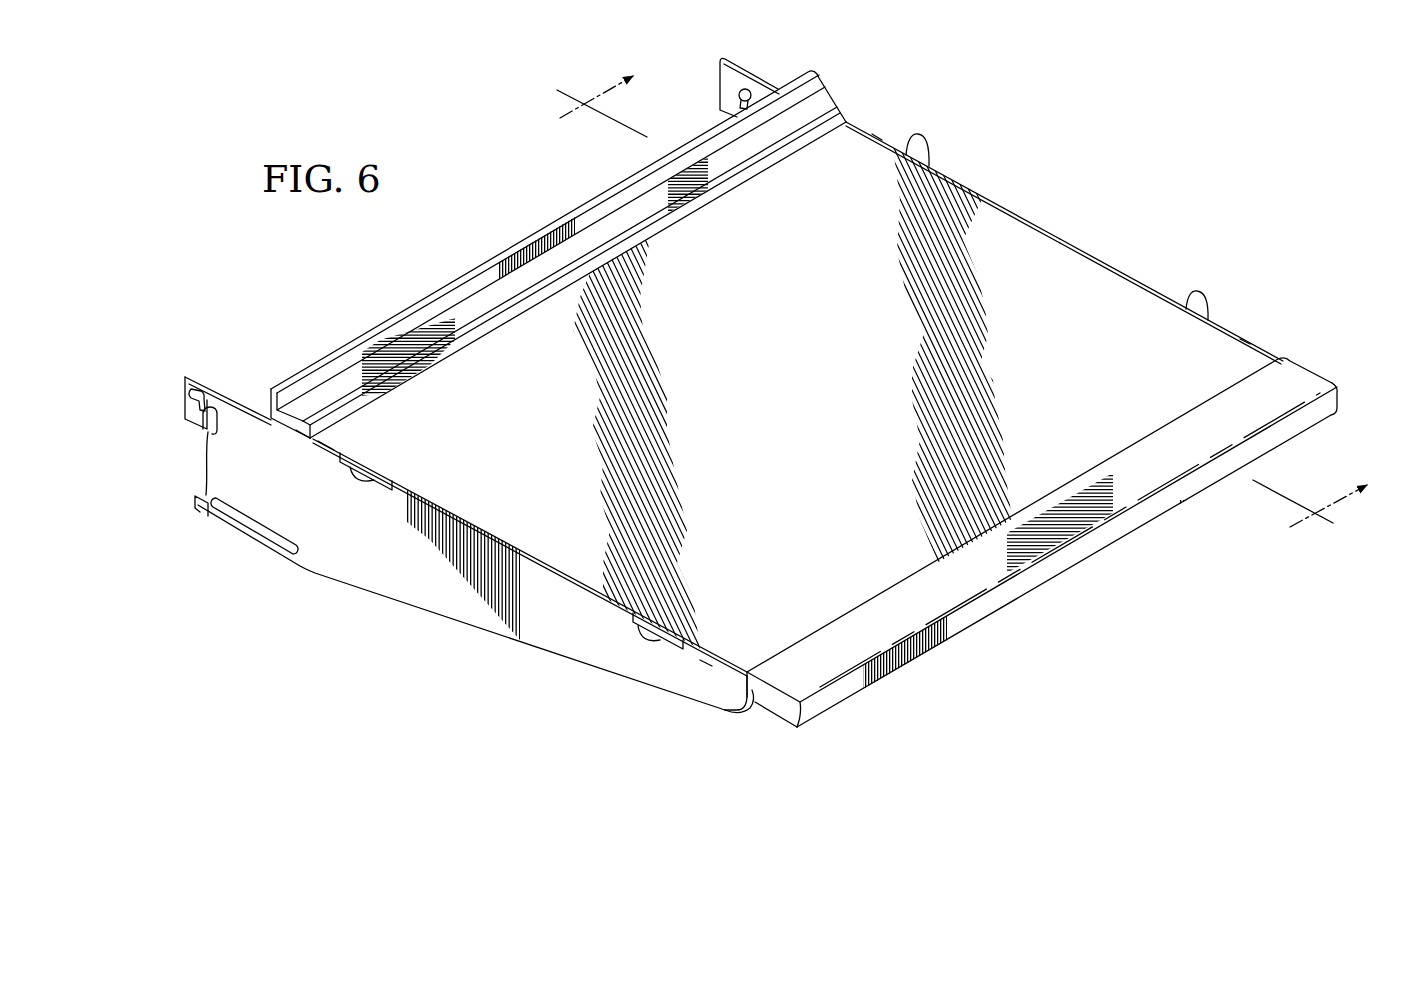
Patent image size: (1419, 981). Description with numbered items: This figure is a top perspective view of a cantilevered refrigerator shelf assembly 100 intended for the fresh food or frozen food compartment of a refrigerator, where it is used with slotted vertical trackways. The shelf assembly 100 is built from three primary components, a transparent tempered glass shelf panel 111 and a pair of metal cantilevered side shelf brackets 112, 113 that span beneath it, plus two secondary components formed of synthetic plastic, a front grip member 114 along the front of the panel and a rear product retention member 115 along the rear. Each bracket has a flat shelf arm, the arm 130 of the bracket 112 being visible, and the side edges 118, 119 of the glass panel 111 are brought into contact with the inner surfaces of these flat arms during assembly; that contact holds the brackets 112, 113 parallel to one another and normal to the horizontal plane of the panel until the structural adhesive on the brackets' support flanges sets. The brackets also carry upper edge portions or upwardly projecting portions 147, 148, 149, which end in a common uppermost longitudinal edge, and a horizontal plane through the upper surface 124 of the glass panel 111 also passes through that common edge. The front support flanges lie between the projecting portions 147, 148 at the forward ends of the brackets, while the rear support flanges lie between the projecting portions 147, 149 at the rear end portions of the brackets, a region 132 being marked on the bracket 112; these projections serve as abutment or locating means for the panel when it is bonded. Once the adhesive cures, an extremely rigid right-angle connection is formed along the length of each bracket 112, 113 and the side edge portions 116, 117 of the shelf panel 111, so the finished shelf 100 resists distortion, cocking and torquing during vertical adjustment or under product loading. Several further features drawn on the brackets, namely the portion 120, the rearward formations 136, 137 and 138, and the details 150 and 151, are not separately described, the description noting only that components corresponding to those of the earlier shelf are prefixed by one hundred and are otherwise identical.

The cantilevered shelf assembly 100 is at (1019, 147).
The shelf panel 111 is at (1123, 323).
The side shelf bracket 112 is at (591, 641).
The side shelf bracket 113 is at (765, 70).
The front grip member 114 is at (961, 636).
The rear product retention member 115 is at (502, 253).
The side edge portion 116 is at (888, 150).
The side edge portion 117 is at (413, 508).
The side edge 118 is at (912, 162).
The side edge 119 is at (372, 463).
The rail top edge 120 is at (868, 601).
The upper surface 124 is at (770, 410).
The flat shelf arm 130 is at (352, 542).
The flange extension 132 is at (228, 474).
The hook bracket 136 is at (194, 394).
The keyhole slot 137 is at (726, 81).
The slot 138 is at (205, 517).
The upwardly projecting portion 147 is at (1066, 240).
The upwardly projecting portion 148 is at (1246, 340).
The upwardly projecting portion 149 is at (876, 138).
The hook tab 150 is at (741, 691).
The rail end 151 is at (299, 452).